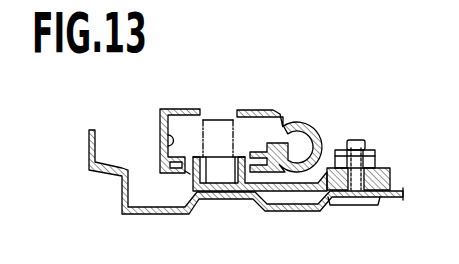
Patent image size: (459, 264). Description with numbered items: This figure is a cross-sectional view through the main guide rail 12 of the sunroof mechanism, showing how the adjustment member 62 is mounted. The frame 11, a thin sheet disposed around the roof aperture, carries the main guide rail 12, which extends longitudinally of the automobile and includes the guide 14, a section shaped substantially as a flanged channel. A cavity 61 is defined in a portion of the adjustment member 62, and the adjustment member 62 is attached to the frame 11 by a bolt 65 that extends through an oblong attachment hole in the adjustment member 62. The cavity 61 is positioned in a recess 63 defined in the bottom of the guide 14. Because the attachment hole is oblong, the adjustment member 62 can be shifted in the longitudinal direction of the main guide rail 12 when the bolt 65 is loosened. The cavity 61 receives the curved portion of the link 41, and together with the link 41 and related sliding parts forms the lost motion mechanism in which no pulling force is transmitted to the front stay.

The frame 11 is at (122, 192).
The main guide rail 12 is at (250, 110).
The guide 14 is at (167, 146).
The link 41 is at (220, 120).
The cavity 61 is at (200, 168).
The adjustment member 62 is at (303, 198).
The recess 63 is at (188, 175).
The bolt 65 is at (360, 206).